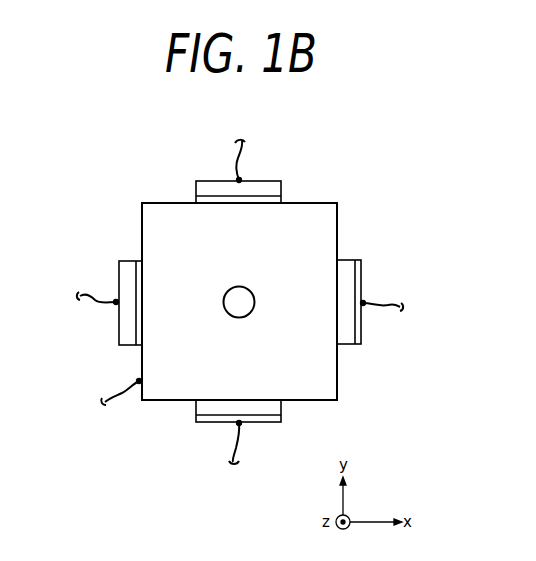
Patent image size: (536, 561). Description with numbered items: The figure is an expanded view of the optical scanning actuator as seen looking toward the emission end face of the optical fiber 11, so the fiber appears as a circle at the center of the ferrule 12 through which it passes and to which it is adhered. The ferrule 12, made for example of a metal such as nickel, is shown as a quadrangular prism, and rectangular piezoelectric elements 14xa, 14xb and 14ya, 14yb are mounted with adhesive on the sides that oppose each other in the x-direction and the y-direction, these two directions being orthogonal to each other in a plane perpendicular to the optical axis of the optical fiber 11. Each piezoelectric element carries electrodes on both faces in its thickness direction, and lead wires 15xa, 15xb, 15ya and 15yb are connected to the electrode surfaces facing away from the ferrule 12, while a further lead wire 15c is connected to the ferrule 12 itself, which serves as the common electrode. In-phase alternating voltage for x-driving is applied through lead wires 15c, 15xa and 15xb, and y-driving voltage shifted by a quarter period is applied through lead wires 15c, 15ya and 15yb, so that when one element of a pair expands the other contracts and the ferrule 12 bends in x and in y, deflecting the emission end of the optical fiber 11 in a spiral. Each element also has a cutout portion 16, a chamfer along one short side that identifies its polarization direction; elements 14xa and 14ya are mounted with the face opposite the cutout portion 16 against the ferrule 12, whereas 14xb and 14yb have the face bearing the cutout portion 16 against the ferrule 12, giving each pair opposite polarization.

The optical fiber 11 is at (223, 310).
The ferrule 12 is at (325, 223).
The piezoelectric element 14xa is at (118, 265).
The piezoelectric element 14xb is at (362, 267).
The piezoelectric element 14ya is at (218, 181).
The piezoelectric element 14yb is at (210, 422).
The lead wire 15xa is at (97, 305).
The lead wire 15xb is at (385, 310).
The lead wire 15ya is at (243, 153).
The lead wire 15yb is at (250, 455).
The lead wire 15c is at (120, 403).
The cutout portion 16 is at (210, 190).